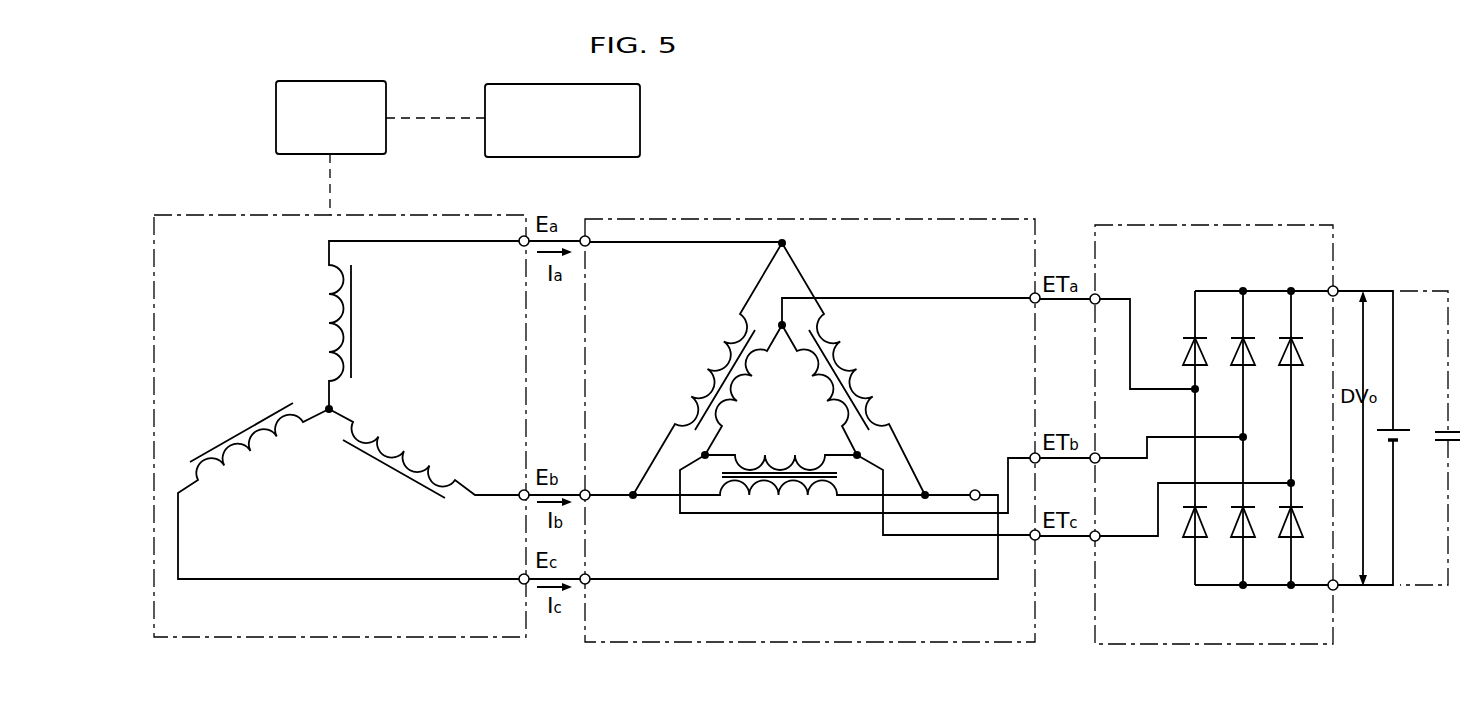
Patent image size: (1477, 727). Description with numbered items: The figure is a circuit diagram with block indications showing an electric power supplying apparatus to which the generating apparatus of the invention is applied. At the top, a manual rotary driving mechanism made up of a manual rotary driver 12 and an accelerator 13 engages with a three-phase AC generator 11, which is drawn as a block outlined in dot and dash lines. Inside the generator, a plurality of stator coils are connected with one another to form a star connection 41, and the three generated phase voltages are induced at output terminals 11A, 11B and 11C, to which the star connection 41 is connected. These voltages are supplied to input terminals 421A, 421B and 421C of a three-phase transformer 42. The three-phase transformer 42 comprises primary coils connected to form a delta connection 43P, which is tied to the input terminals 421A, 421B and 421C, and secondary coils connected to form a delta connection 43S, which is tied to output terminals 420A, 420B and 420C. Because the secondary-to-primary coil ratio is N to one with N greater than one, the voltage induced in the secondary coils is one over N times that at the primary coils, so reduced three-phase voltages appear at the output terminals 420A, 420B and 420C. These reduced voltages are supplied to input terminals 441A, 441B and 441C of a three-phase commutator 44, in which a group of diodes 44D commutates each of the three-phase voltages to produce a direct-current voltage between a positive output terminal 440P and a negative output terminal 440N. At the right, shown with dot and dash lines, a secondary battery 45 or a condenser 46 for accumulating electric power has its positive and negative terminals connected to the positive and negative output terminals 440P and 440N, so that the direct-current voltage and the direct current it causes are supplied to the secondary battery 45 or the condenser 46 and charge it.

The three-phase AC generator 11 is at (210, 637).
The output terminal 11A is at (520, 248).
The output terminal 11B is at (522, 488).
The output terminal 11C is at (522, 573).
The manual rotary driver 12 is at (605, 157).
The accelerator 13 is at (364, 154).
The star connection 41 is at (315, 388).
The three-phase transformer 42 is at (833, 642).
The input terminal 421A is at (587, 246).
The input terminal 421B is at (587, 500).
The input terminal 421C is at (587, 584).
The output terminal 420A is at (1032, 292).
The output terminal 420B is at (1033, 452).
The output terminal 420C is at (1032, 542).
The delta connection of primary coils 43P is at (740, 318).
The delta connection of secondary coils 43S is at (843, 445).
The three-phase commutator 44 is at (1243, 644).
The input terminal 441A is at (1097, 295).
The input terminal 441B is at (1097, 453).
The input terminal 441C is at (1097, 541).
The group of diodes 44D is at (1220, 287).
The positive output terminal 440P is at (1337, 288).
The negative output terminal 440N is at (1338, 592).
The secondary battery 45 is at (1407, 427).
The condenser 46 is at (1432, 443).